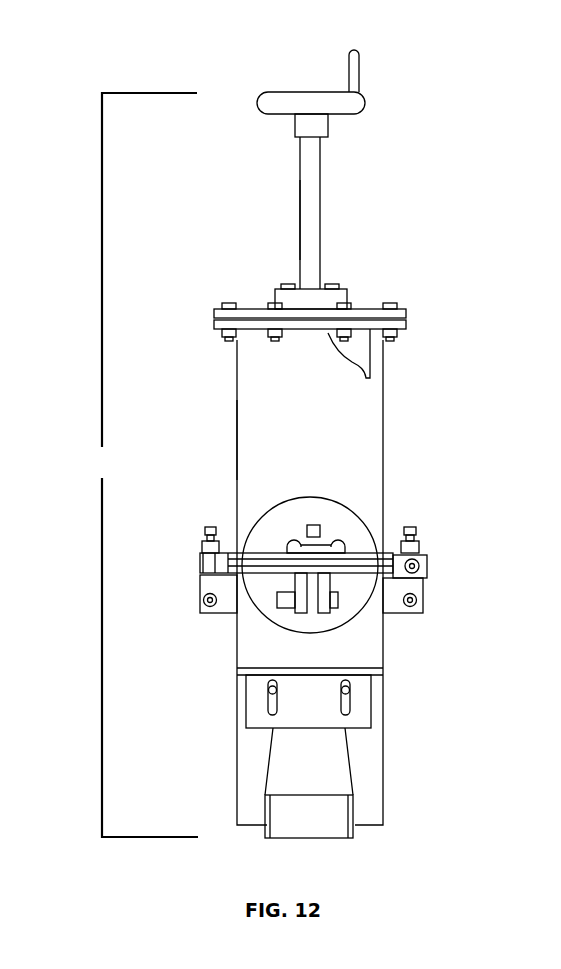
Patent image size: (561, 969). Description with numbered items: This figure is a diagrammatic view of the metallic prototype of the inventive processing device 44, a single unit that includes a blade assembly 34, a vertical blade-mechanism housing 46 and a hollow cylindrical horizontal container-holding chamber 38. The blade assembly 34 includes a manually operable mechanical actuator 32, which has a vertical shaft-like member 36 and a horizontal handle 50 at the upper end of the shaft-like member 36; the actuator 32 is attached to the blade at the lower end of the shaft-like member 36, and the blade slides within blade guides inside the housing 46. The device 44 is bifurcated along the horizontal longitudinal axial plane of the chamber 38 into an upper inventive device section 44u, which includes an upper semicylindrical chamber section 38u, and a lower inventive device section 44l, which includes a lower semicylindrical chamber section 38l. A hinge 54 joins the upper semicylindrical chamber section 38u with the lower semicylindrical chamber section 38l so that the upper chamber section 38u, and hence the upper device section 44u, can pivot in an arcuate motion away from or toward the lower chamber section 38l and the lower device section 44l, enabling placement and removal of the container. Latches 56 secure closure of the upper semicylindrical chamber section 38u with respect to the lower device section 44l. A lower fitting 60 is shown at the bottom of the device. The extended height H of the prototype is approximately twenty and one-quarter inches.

The extended height H is at (144, 465).
The horizontal handle 50 is at (322, 90).
The manually operable mechanical actuator 32 is at (325, 190).
The vertical shaft-like member 36 is at (296, 224).
The inventive processing device 44 is at (418, 198).
The blade assembly 34 is at (348, 230).
The vertical blade-mechanism housing 46 is at (387, 455).
The upper inventive device section 44u is at (387, 398).
The lower inventive device section 44l is at (388, 643).
The lower fitting 60 is at (357, 833).
The hollow cylindrical horizontal container-holding chamber 38 is at (286, 500).
The upper semicylindrical chamber section 38u is at (320, 510).
The lower semicylindrical chamber section 38l is at (338, 613).
The hinge 54 is at (430, 563).
The latch 56 is at (198, 540).